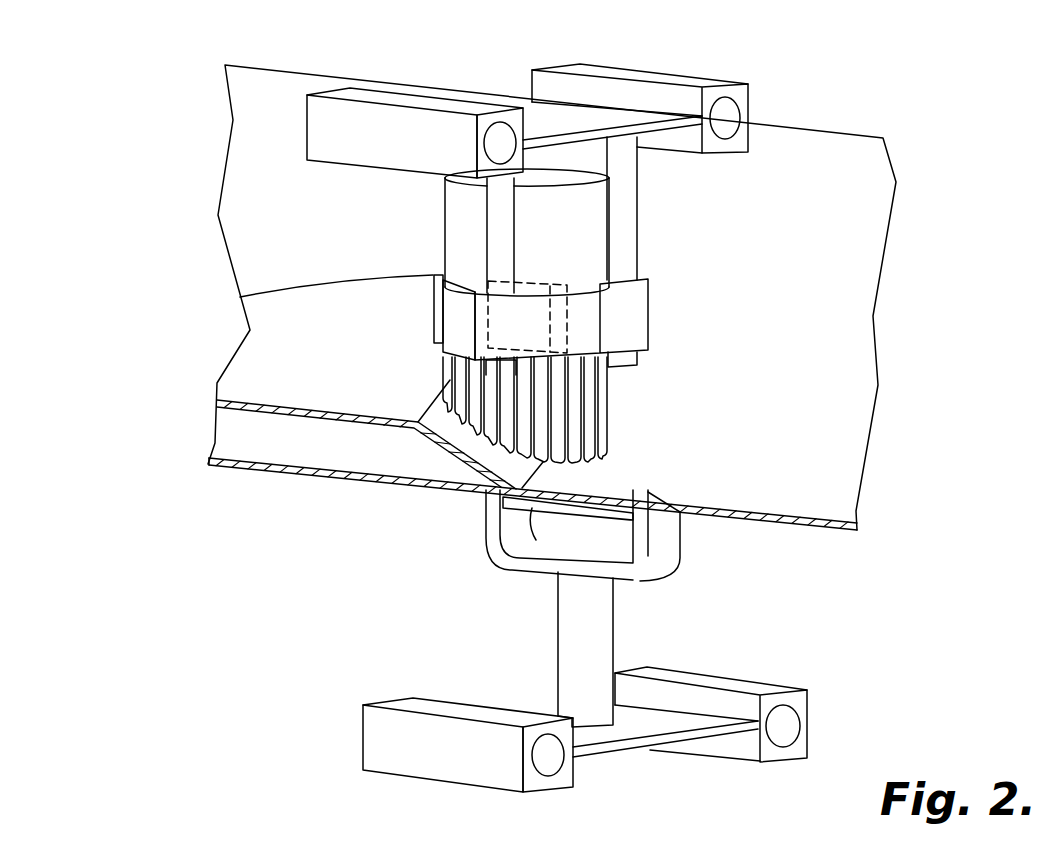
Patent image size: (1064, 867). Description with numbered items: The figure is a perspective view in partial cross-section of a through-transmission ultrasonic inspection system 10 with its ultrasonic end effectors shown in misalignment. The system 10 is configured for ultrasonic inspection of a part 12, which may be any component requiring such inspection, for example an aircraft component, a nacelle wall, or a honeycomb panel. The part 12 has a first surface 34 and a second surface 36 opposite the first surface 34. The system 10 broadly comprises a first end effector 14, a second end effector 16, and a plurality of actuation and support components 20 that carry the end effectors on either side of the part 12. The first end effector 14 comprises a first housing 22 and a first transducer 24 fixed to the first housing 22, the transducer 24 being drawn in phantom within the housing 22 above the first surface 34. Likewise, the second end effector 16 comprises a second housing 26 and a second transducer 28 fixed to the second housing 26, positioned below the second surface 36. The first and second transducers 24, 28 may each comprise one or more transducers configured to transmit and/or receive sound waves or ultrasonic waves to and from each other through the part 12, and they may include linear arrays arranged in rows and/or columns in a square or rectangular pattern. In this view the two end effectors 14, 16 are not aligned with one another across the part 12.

The through-transmission ultrasonic inspection system 10 is at (286, 204).
The part 12 is at (252, 262).
The first end effector 14 is at (607, 229).
The second end effector 16 is at (667, 548).
The actuation and support components 20 is at (702, 80).
The first housing 22 is at (447, 312).
The first transducer 24 is at (522, 310).
The second housing 26 is at (492, 525).
The second transducer 28 is at (547, 508).
The first surface 34 is at (319, 340).
The second surface 36 is at (292, 470).